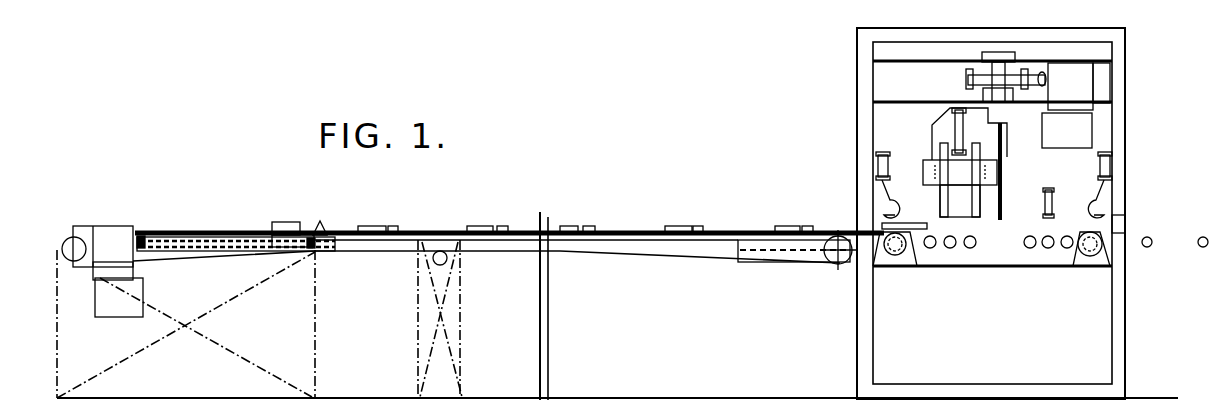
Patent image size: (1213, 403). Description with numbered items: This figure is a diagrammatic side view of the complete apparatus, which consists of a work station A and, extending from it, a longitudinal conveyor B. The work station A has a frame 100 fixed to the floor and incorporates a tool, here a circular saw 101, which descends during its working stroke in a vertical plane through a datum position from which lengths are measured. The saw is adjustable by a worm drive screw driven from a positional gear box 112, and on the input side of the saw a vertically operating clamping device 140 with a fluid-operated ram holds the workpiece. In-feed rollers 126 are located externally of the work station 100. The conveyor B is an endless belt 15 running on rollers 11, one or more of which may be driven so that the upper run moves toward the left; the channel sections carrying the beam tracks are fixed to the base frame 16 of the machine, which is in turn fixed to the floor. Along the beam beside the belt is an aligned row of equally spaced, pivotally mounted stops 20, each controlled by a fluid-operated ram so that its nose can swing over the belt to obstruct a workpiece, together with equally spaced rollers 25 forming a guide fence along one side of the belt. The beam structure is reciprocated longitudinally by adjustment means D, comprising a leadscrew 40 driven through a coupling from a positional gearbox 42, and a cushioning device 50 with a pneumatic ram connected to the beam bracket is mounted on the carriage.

The rollers 11 is at (72, 240).
The positional gearbox 42 is at (110, 226).
The leadscrew 40 is at (182, 236).
The adjustment means D is at (228, 234).
The cushioning device 50 is at (286, 224).
The stops 20 is at (364, 226).
The rollers 25 is at (397, 226).
The base frame 16 is at (465, 332).
The channel sections 15 is at (786, 256).
The longitudinal conveyor B is at (740, 266).
The circular saw 101 is at (1003, 197).
The clamping device 140 is at (1054, 197).
The positional gear box 112 is at (1075, 86).
The work station A is at (1128, 162).
The in-feed rollers 126 is at (1200, 238).
The frame 100 is at (1125, 340).